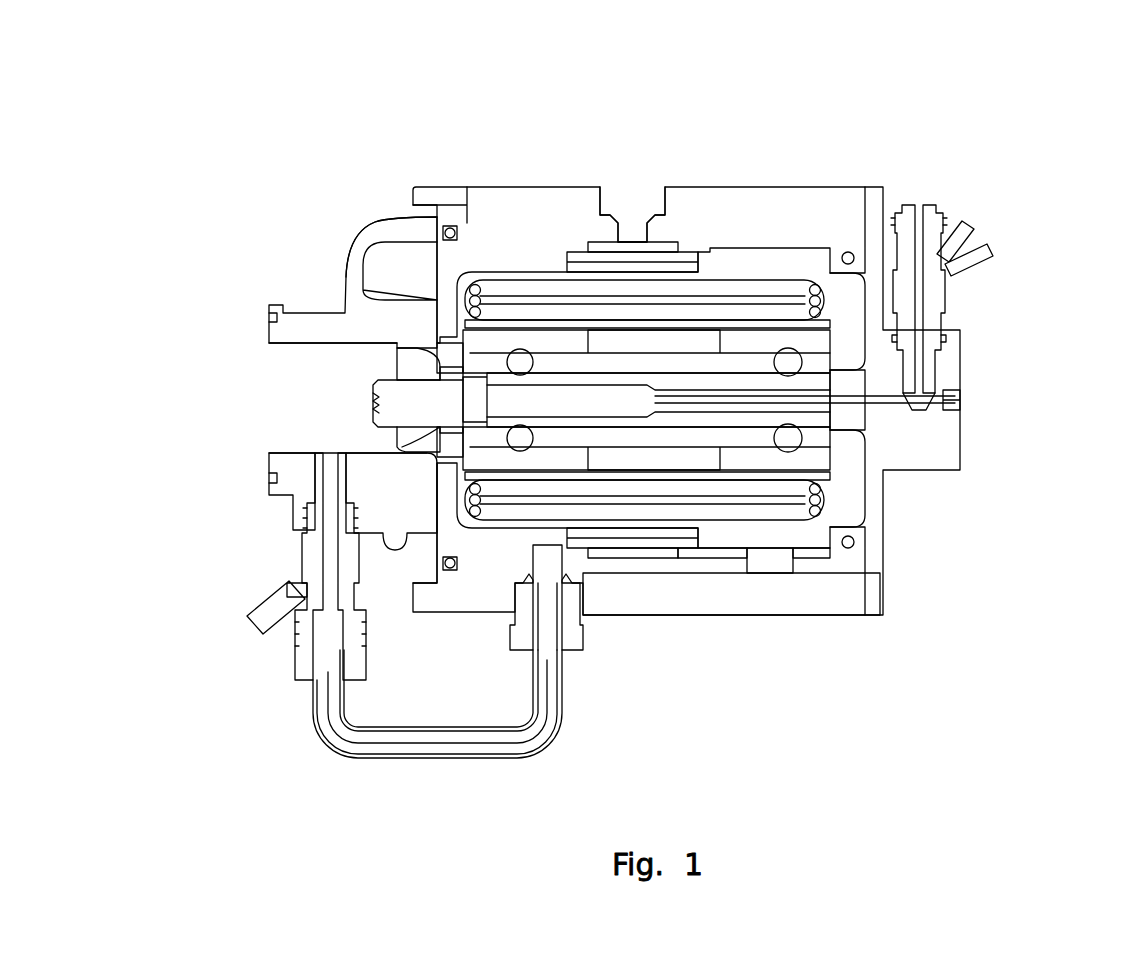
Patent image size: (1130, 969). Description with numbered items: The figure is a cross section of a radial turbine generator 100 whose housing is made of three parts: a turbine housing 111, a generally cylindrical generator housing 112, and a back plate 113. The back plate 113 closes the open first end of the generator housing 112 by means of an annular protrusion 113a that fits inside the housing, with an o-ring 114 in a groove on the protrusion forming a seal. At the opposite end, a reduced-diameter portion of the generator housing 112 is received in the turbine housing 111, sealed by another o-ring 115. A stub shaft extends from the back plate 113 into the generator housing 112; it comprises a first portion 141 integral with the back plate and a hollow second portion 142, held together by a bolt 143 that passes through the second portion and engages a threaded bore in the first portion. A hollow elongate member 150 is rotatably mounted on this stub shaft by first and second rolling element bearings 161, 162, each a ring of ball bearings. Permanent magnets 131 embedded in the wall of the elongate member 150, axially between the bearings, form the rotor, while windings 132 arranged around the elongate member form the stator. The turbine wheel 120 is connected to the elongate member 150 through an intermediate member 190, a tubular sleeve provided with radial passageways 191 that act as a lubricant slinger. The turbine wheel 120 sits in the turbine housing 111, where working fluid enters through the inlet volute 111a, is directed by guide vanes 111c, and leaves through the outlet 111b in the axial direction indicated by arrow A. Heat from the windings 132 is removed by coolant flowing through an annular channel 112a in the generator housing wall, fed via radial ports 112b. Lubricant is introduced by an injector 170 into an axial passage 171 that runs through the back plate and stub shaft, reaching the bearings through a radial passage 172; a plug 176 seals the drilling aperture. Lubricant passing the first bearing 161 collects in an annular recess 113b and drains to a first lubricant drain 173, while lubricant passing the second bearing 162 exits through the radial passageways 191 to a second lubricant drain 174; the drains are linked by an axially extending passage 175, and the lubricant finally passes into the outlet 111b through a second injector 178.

The turbine generator 100 is at (998, 97).
The turbine housing 111 is at (313, 308).
The inlet volute 111a is at (390, 272).
The outlet 111b is at (288, 353).
The guide vanes 111c is at (433, 467).
The generator housing 112 is at (538, 200).
The annular channel 112a is at (673, 243).
The radial port 112b is at (630, 196).
The back plate 113 is at (880, 186).
The annular protrusion 113a is at (837, 547).
The annular recess 113b is at (853, 313).
The o-ring 114 is at (846, 535).
The o-ring 115 is at (450, 230).
The turbine wheel 120 is at (387, 408).
The permanent magnets 131 is at (707, 457).
The windings 132 is at (780, 287).
The first portion of the stub shaft 141 is at (810, 378).
The second portion of the stub shaft 142 is at (543, 380).
The bolt 143 is at (482, 392).
The elongate member 150 is at (552, 457).
The first rolling element bearing 161 is at (778, 437).
The second rolling element bearing 162 is at (457, 435).
The injector 170 is at (937, 215).
The axial passage 171 is at (888, 402).
The radial passage 172 is at (677, 363).
The first lubricant drain 173 is at (767, 553).
The second lubricant drain 174 is at (545, 547).
The axially extending passage 175 is at (705, 565).
The plug 176 is at (948, 372).
The second injector 178 is at (302, 650).
The intermediate member 190 is at (360, 310).
The radial passageways 191 is at (473, 462).
The arrow A is at (280, 400).